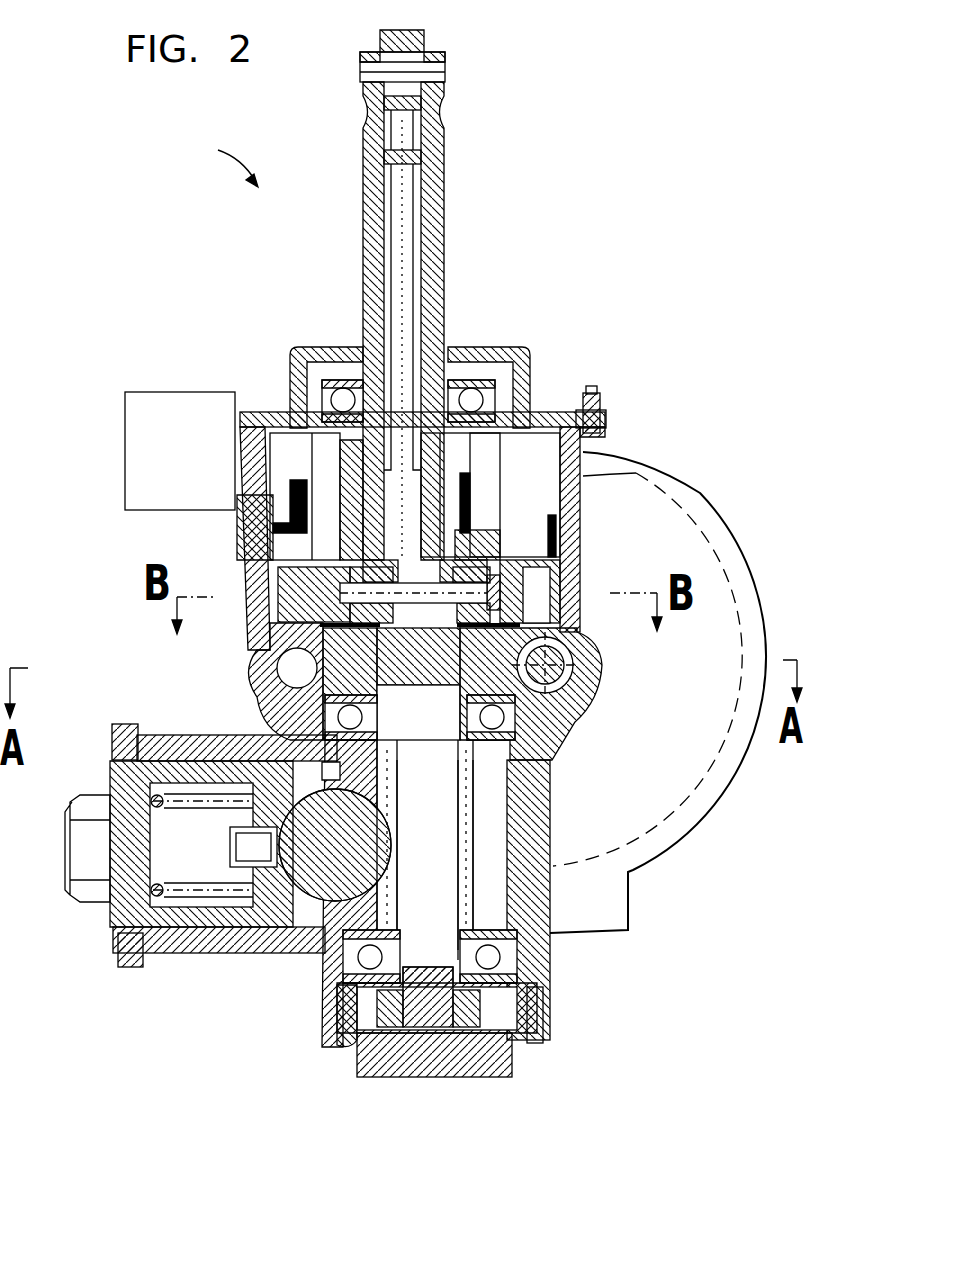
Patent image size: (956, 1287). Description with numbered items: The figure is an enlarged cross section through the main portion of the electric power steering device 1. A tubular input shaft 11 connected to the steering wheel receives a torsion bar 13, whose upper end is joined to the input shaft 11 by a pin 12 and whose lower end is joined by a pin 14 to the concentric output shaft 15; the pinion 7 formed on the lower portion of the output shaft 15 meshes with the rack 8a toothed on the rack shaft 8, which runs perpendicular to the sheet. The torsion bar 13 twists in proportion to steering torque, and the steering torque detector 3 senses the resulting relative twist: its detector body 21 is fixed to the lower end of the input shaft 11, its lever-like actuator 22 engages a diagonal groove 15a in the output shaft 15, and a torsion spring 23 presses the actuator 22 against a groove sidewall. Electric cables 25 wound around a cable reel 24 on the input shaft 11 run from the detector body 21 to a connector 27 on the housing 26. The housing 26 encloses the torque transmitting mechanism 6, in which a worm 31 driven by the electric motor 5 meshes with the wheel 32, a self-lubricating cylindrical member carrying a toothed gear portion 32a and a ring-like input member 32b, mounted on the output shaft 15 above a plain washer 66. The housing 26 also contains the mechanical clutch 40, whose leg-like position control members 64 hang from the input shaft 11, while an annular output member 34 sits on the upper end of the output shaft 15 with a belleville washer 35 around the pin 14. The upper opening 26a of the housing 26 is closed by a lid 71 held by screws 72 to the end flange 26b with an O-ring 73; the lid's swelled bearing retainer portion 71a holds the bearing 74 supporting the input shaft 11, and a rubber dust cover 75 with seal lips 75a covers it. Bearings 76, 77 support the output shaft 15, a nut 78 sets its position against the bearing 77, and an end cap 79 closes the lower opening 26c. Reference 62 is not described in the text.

The electric power steering device 1 is at (212, 160).
The steering torque detector 3 is at (347, 442).
The electric motor 5 is at (712, 750).
The torque transmitting mechanism 6 is at (583, 661).
The pinion 7 is at (470, 892).
The rack shaft 8 is at (277, 960).
The rack 8a is at (390, 850).
The input shaft 11 is at (447, 185).
The pin 12 is at (445, 70).
The torsion bar 13 is at (407, 247).
The pin 14 is at (555, 605).
The output shaft 15 is at (530, 800).
The diagonal groove 15a is at (418, 684).
The detector body 21 is at (335, 465).
The lever-like actuator 22 is at (333, 547).
The torsion spring 23 is at (290, 488).
The cable reel 24 is at (590, 480).
The electric cables 25 is at (473, 495).
The housing 26 is at (652, 497).
The opening 26a is at (570, 425).
The upper end flange 26b is at (605, 432).
The opening 26c is at (337, 1047).
The connector 27 is at (126, 450).
The worm 31 is at (578, 682).
The wheel 32 is at (258, 697).
The toothed gear portion 32a is at (272, 672).
The input member 32b is at (262, 618).
The output member 34 is at (520, 545).
The belleville washer 35 is at (488, 502).
The mechanical clutch 40 is at (575, 562).
The cross pin 62 is at (322, 592).
The position control members 64 is at (542, 560).
The plain washer 66 is at (248, 647).
The lid 71 is at (540, 412).
The bearing retainer portion 71a is at (512, 352).
The screws 72 is at (603, 395).
The O-ring 73 is at (594, 400).
The bearing 74 is at (475, 378).
The dust cover 75 is at (335, 375).
The seal lips 75a is at (293, 340).
The bearing 76 is at (545, 722).
The bearing 77 is at (512, 962).
The nut 78 is at (490, 1008).
The end cap 79 is at (483, 1067).